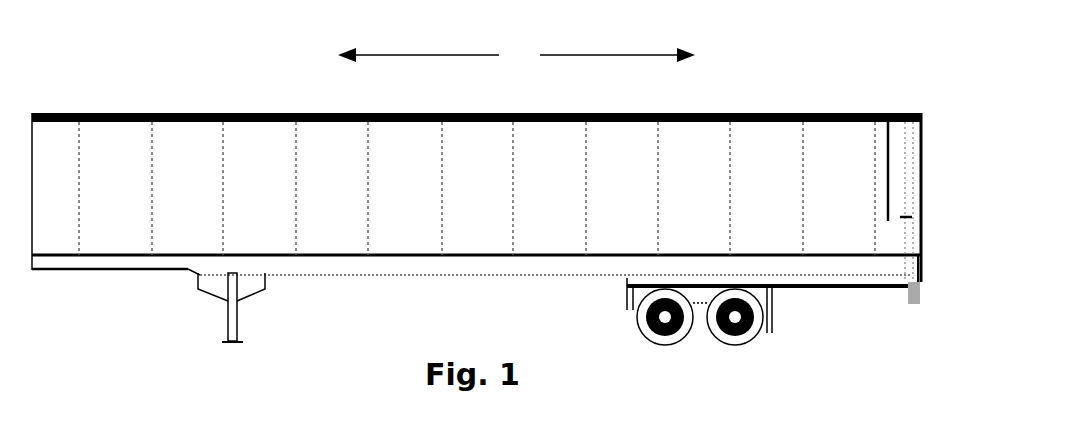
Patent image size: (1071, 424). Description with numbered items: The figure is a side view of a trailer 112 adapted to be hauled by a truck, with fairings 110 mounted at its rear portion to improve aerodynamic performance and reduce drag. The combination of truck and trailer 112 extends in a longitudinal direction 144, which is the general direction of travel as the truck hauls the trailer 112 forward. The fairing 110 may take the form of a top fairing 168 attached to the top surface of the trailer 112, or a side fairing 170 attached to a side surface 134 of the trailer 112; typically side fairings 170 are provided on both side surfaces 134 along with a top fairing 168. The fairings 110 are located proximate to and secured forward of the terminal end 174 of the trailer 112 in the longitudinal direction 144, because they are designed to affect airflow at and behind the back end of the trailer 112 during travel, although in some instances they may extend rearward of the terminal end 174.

The fairing 110 is at (847, 85).
The trailer 112 is at (270, 87).
The side surface 134 is at (709, 190).
The longitudinal direction 144 is at (516, 55).
The top fairing 168 is at (908, 111).
The side fairing 170 is at (888, 205).
The terminal end 174 is at (919, 260).